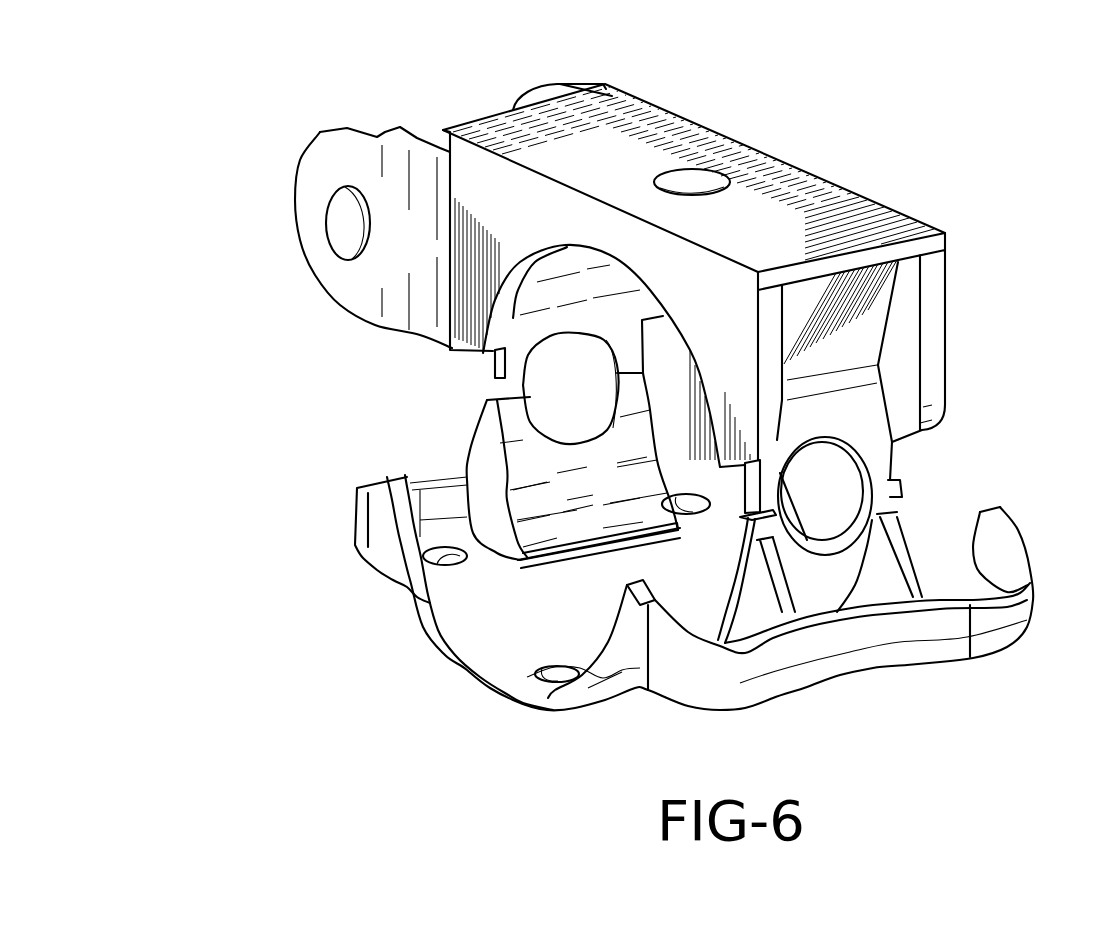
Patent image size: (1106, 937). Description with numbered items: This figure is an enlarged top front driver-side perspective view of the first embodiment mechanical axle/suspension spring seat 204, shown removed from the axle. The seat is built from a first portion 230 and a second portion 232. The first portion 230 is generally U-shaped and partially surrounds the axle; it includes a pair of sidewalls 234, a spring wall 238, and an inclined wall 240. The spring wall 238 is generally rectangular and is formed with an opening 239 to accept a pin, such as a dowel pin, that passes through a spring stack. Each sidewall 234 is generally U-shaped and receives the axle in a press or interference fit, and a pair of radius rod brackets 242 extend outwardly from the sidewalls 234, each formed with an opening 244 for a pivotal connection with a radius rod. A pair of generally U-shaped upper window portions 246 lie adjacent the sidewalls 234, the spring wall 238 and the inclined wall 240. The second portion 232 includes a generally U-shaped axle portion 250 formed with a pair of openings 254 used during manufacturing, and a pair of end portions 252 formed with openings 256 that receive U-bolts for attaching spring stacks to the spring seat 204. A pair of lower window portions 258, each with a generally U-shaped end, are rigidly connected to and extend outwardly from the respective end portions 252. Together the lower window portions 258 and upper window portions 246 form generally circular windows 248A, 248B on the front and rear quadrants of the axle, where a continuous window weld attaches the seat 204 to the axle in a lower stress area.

The mechanical axle/suspension spring seat 204 is at (1022, 162).
The first portion 230 is at (666, 100).
The second portion 232 is at (547, 713).
The sidewalls 234 is at (470, 297).
The spring wall 238 is at (850, 217).
The opening 239 is at (717, 185).
The inclined wall 240 is at (858, 315).
The radius rod brackets 242 is at (328, 160).
The opening 244 is at (338, 228).
The upper window portions 246 is at (513, 358).
The window 248A is at (835, 530).
The window 248B is at (527, 416).
The axle portion 250 is at (503, 658).
The end portions 252 is at (365, 523).
The openings 254 is at (556, 672).
The openings 256 is at (442, 557).
The lower window portions 258 is at (503, 563).